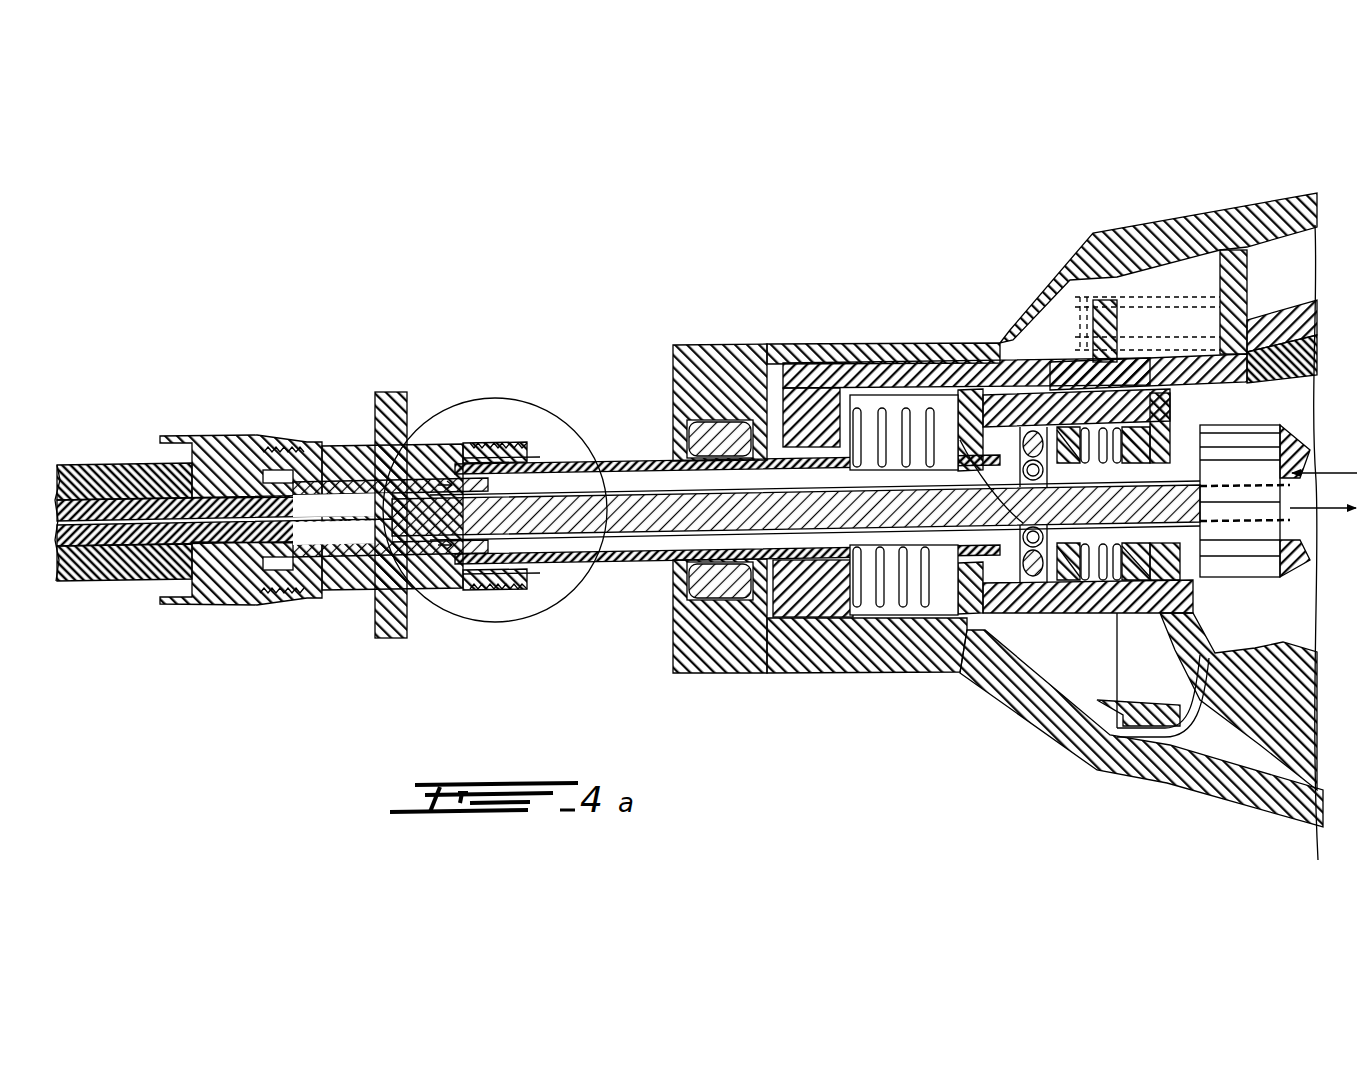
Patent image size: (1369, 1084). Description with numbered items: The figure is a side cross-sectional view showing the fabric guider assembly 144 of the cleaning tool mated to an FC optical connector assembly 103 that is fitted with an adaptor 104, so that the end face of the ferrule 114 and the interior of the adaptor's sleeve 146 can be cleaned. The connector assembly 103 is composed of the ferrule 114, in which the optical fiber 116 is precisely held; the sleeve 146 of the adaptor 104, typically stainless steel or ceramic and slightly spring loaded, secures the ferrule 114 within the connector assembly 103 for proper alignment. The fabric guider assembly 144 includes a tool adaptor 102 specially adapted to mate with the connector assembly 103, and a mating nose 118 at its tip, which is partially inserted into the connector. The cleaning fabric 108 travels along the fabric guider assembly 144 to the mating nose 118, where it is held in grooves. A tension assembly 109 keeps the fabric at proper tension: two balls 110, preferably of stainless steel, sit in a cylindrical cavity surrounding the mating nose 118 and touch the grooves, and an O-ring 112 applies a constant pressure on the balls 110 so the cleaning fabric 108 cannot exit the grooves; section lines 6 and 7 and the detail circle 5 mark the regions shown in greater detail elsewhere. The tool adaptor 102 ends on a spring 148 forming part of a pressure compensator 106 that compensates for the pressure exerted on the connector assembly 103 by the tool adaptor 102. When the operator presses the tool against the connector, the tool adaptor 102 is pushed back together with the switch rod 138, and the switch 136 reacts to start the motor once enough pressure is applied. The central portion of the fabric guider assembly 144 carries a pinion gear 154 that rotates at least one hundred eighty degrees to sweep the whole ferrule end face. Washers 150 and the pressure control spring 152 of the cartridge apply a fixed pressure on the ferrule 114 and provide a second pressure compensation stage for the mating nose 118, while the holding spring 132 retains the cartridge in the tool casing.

The optical fiber 116 is at (80, 463).
The ferrule 114 is at (140, 463).
The connector assembly 103 is at (290, 393).
The adaptor 104 is at (398, 398).
The tool adaptor 102 is at (563, 462).
The fabric guider assembly 144 is at (638, 442).
The cleaning fabric 108 is at (613, 493).
The mating nose 118 is at (612, 520).
The section line 6 is at (425, 478).
The detail circle 5 is at (455, 626).
The sleeve 146 is at (400, 570).
The pressure compensator 106 is at (840, 314).
The switch rod 138 is at (853, 345).
The spring 148 is at (903, 344).
The balls 110 is at (963, 343).
The section line 7 is at (1001, 342).
The O-ring 112 is at (1020, 343).
The washers 150 is at (1068, 335).
The pressure control spring 152 is at (1133, 292).
The switch 136 is at (1157, 320).
The pinion gear 154 is at (1255, 453).
The tension assembly 109 is at (1027, 623).
The holding spring 132 is at (1175, 783).